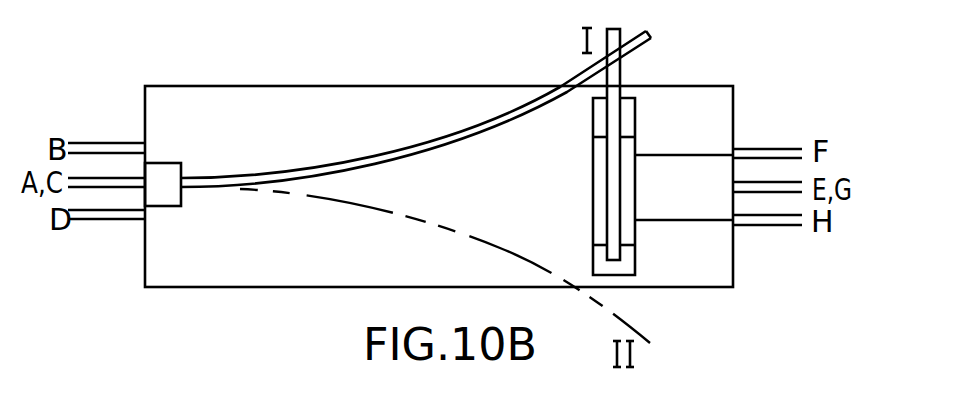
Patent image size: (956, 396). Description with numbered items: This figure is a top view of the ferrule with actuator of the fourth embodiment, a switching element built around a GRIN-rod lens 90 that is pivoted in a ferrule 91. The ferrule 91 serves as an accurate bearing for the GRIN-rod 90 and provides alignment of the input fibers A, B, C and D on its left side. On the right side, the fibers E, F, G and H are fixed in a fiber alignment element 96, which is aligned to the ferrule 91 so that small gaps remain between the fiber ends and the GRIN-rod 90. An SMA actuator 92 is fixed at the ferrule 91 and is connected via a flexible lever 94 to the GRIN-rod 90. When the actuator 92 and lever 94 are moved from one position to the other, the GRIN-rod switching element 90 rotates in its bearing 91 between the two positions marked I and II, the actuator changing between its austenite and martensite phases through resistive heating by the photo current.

The GRIN-rod lens 90 is at (627, 150).
The ferrule 91 is at (330, 107).
The SMA actuator 92 is at (472, 132).
The flexible lever 94 is at (612, 82).
The fiber alignment element 96 is at (680, 213).